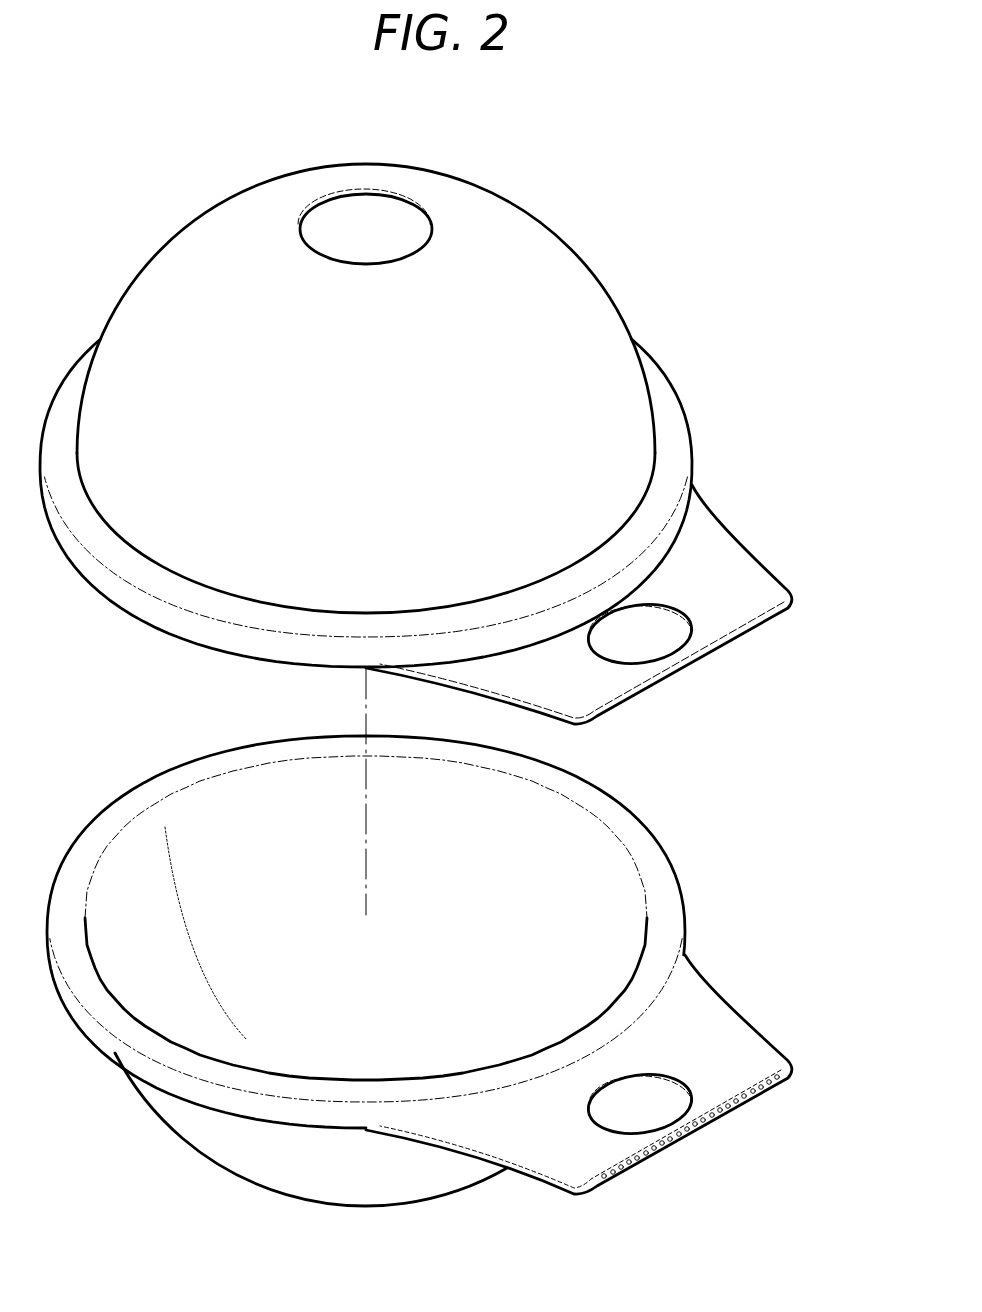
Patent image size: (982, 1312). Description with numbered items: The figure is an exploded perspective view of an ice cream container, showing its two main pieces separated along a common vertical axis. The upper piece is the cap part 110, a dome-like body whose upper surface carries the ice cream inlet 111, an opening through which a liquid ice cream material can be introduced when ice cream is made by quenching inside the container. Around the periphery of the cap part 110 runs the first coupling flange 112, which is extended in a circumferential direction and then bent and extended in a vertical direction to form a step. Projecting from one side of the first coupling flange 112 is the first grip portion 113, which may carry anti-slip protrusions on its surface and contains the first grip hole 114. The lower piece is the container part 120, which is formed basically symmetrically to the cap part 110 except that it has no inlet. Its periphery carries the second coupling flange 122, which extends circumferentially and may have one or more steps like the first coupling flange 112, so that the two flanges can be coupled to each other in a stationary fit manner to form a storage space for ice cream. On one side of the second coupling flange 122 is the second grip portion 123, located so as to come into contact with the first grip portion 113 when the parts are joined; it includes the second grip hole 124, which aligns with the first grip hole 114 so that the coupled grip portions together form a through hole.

The cap part 110 is at (562, 252).
The ice cream inlet 111 is at (363, 230).
The first coupling flange 112 is at (667, 400).
The first grip portion 113 is at (755, 575).
The first grip hole 114 is at (658, 642).
The container part 120 is at (207, 1152).
The second coupling flange 122 is at (662, 868).
The second grip portion 123 is at (732, 1018).
The second grip hole 124 is at (657, 1103).